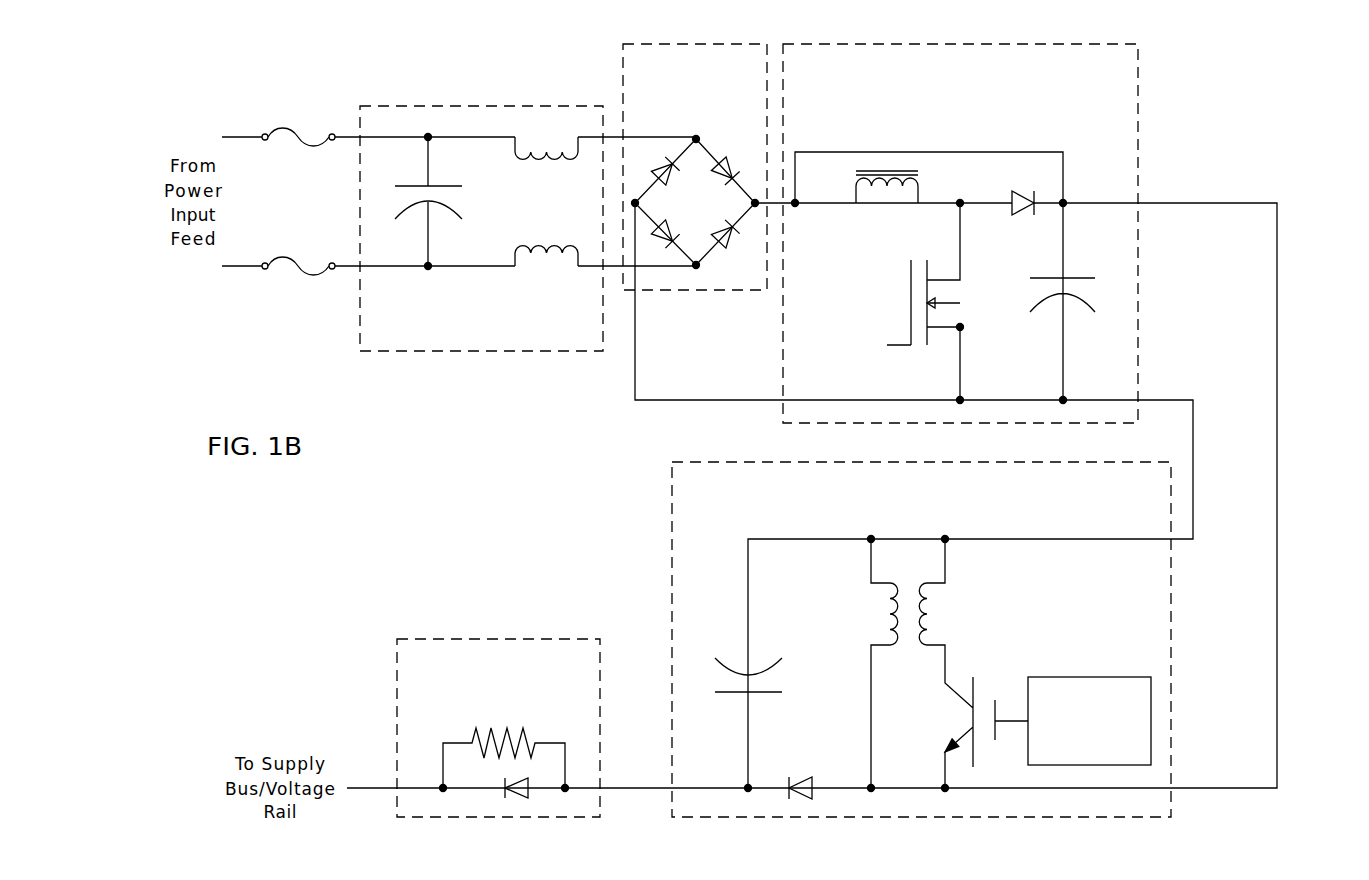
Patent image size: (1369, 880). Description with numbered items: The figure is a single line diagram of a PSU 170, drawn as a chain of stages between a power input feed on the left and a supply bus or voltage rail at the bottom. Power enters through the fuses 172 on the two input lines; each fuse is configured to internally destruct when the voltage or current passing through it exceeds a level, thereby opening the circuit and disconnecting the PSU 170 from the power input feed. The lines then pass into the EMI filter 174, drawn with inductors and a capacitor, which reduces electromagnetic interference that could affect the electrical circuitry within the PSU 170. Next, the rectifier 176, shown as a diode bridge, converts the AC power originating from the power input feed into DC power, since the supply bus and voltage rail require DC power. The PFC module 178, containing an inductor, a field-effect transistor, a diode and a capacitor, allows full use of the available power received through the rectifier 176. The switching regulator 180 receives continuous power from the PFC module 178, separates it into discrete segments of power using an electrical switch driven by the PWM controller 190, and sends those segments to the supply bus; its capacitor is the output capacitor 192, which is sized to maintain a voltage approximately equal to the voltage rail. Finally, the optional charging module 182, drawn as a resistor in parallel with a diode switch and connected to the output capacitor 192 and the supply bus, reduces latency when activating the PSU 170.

The PSU 170 is at (732, 411).
The fuses 172 is at (355, 140).
The EMI filter 174 is at (481, 228).
The rectifier 176 is at (695, 167).
The PFC module 178 is at (960, 233).
The switching regulator 180 is at (866, 639).
The charging module 182 is at (498, 728).
The PWM controller 190 is at (1089, 721).
The output capacitor 192 is at (672, 608).